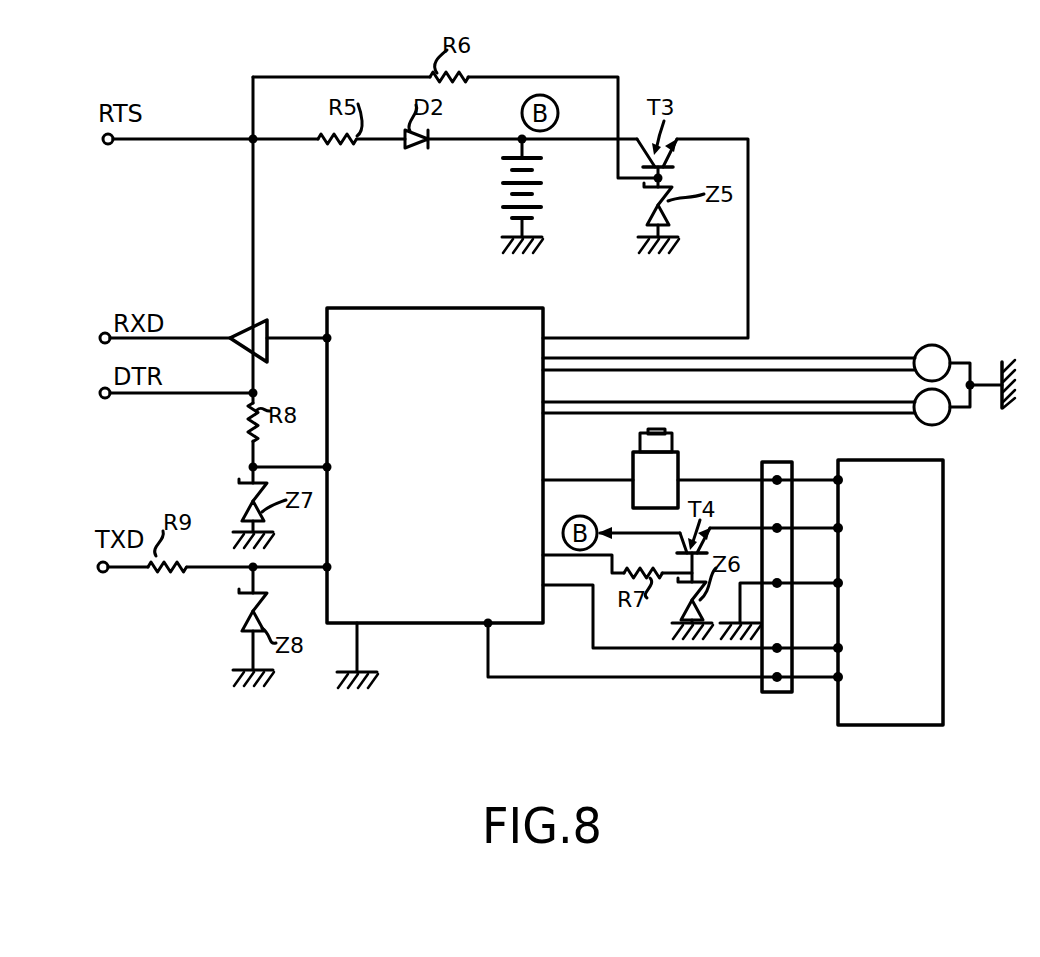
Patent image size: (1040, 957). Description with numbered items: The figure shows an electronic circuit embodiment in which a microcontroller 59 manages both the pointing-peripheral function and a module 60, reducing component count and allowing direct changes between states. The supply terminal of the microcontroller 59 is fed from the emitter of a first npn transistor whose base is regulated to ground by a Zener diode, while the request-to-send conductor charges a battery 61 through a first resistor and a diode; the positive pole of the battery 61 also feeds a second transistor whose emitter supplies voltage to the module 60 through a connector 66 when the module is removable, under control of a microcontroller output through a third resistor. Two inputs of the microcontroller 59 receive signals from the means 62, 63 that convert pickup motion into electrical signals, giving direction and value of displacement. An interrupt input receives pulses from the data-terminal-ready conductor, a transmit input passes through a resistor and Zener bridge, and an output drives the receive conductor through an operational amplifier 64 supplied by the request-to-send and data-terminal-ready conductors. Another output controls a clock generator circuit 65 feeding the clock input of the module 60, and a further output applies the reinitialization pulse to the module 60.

The microcontroller 59 is at (445, 603).
The module 60 is at (930, 650).
The battery 61 is at (541, 183).
The means enabling conversion of the motion of the pickup into electrical signals 62 is at (938, 346).
The means enabling conversion of the motion of the pickup into electrical signals 63 is at (938, 424).
The operational amplifier 64 is at (260, 322).
The clock generator circuit 65 is at (678, 470).
The connector 66 is at (776, 693).